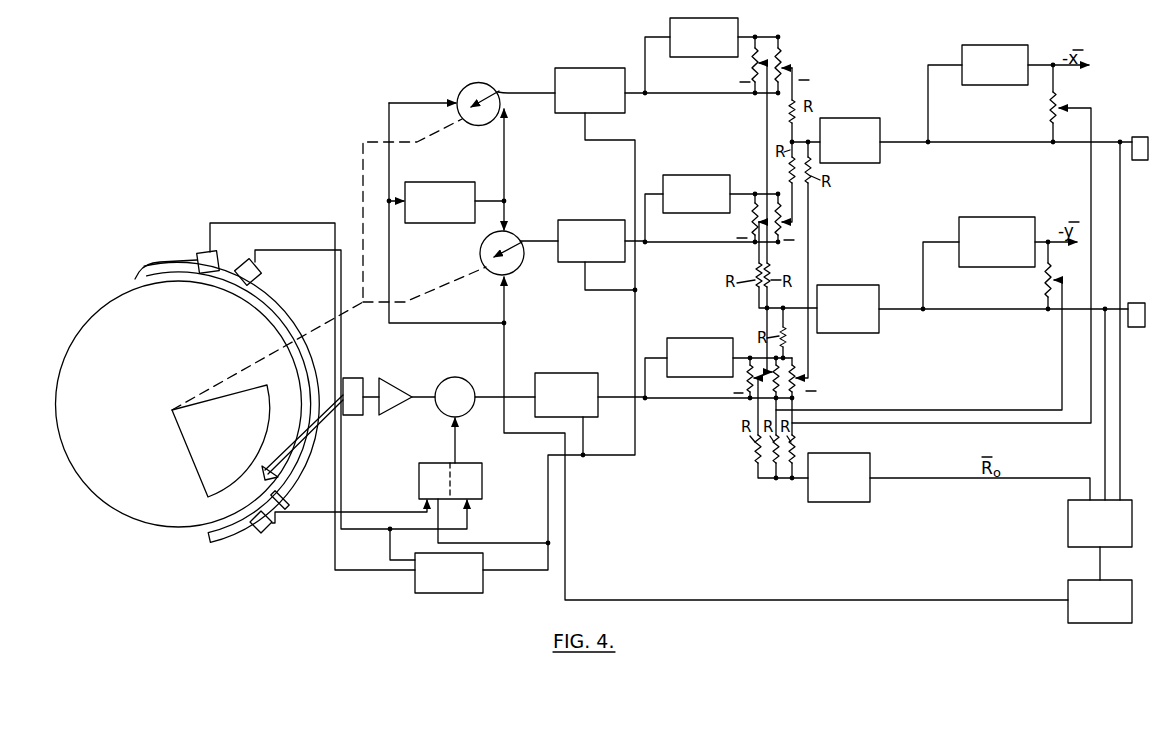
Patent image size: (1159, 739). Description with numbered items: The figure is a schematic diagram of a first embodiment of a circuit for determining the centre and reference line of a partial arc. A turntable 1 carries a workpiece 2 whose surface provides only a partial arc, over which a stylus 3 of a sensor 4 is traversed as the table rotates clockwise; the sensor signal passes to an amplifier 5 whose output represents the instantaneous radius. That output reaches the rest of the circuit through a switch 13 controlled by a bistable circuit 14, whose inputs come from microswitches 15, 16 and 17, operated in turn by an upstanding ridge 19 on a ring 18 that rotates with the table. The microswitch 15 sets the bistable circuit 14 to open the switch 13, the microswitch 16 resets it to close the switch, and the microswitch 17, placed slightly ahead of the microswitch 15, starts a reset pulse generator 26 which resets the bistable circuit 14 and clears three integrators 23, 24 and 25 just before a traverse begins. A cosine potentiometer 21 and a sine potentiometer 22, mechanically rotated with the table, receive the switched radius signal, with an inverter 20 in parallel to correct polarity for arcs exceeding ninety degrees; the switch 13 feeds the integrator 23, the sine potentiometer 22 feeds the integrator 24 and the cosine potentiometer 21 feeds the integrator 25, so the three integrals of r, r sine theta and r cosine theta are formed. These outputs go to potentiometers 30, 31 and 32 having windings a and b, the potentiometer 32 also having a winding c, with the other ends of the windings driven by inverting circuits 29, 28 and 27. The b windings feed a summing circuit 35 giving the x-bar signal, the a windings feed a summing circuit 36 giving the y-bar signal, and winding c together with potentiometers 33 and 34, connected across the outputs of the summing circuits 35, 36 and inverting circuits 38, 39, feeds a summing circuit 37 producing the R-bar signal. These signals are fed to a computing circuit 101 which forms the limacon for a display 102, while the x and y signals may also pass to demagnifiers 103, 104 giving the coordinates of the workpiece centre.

The turntable 1 is at (128, 517).
The workpiece 2 is at (198, 477).
The stylus 3 is at (256, 474).
The sensor 4 is at (353, 396).
The amplifier 5 is at (395, 396).
The switch 13 is at (455, 397).
The bistable circuit 14 is at (473, 481).
The microswitch 15 is at (258, 268).
The microswitch 16 is at (265, 535).
The microswitch 17 is at (203, 253).
The ring 18 is at (173, 263).
The upstanding ridge 19 is at (282, 502).
The inverter 20 is at (440, 202).
The cosine potentiometer 21 is at (473, 95).
The sine potentiometer 22 is at (502, 271).
The integrator 23 is at (566, 395).
The integrator 24 is at (591, 241).
The integrator 25 is at (590, 90).
The reset pulse generator 26 is at (449, 573).
The inverting circuit 27 is at (718, 368).
The inverting circuit 28 is at (711, 208).
The inverting circuit 29 is at (711, 55).
The potentiometer 30 is at (795, 52).
The potentiometer 31 is at (754, 182).
The potentiometer 32 is at (829, 386).
The potentiometer 33 is at (1049, 107).
The potentiometer 34 is at (1044, 285).
The summing circuit 35 is at (850, 140).
The summing circuit 36 is at (848, 309).
The summing circuit 37 is at (839, 477).
The inverting circuit 38 is at (1025, 65).
The inverting circuit 39 is at (1018, 242).
The computing circuit 101 is at (1100, 523).
The display 102 is at (1100, 601).
The demagnifier 103 is at (1140, 137).
The demagnifier 104 is at (1136, 328).